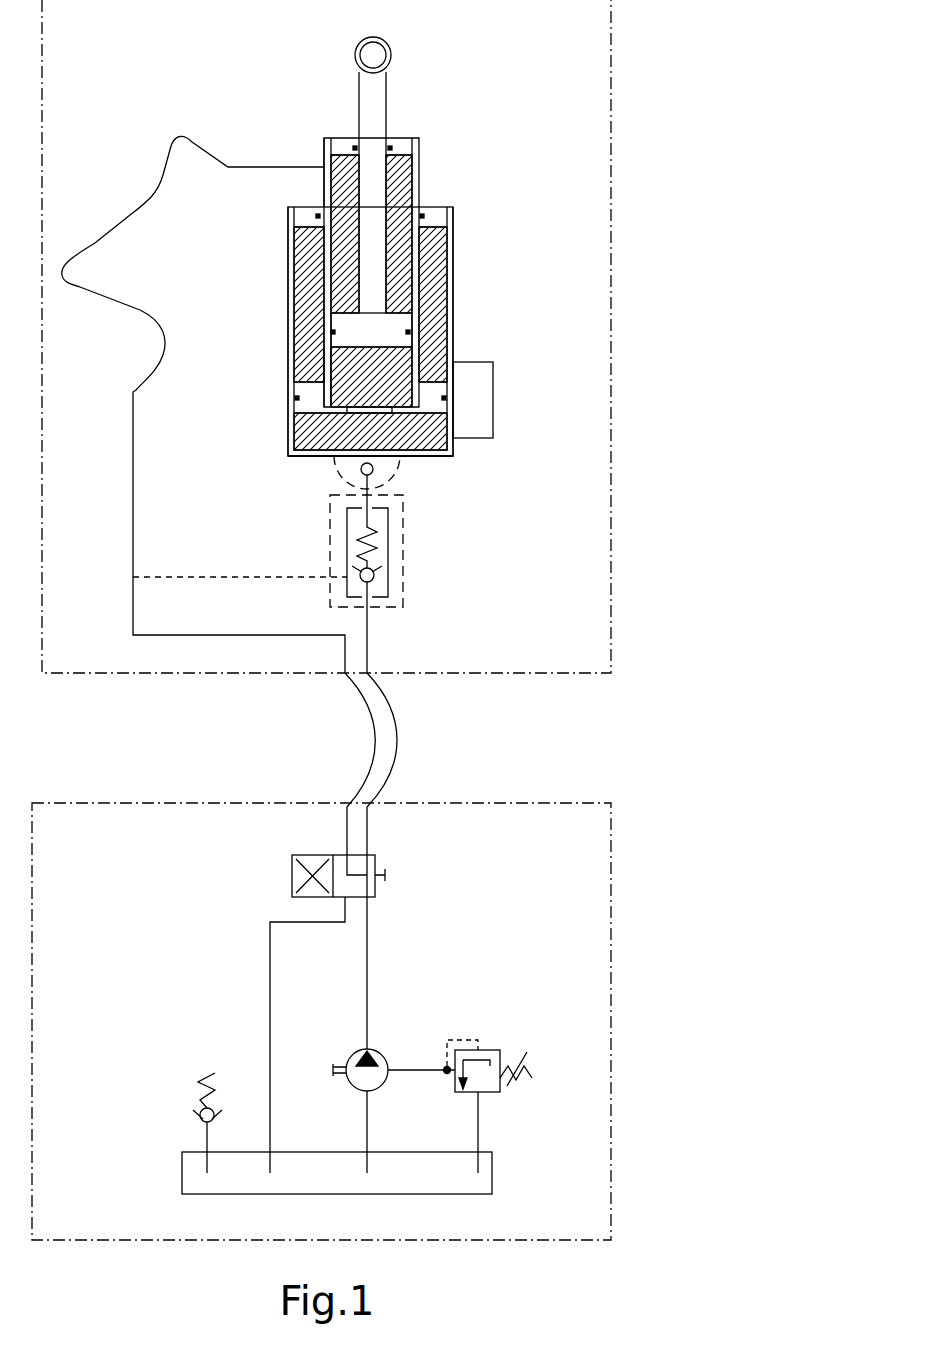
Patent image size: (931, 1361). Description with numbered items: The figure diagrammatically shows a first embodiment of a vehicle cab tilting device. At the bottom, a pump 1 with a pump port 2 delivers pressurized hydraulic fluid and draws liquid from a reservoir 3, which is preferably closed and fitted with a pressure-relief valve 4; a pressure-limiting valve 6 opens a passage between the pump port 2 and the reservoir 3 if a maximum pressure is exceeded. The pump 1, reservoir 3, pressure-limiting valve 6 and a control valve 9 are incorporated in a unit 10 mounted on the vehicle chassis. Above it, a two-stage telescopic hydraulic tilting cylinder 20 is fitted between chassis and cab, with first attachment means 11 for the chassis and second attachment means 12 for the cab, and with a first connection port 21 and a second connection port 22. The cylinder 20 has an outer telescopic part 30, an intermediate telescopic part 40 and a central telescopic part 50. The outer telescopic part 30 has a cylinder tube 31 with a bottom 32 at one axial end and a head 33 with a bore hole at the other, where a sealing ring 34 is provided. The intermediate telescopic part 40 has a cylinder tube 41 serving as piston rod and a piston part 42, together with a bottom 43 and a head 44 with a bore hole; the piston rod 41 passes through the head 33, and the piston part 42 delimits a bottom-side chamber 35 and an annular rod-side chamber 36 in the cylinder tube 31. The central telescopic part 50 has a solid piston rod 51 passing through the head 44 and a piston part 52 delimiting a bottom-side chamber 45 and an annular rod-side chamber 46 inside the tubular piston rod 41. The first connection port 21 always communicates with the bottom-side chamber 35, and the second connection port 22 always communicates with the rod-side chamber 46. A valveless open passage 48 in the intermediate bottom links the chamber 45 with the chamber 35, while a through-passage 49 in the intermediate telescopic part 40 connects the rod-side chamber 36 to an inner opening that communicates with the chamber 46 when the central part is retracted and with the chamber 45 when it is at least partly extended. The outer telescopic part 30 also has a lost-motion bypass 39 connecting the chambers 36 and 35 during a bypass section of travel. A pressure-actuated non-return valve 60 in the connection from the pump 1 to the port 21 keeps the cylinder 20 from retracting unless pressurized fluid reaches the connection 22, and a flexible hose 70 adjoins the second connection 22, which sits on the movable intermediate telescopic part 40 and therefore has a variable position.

The pump 1 is at (371, 1081).
The pump port 2 is at (368, 1050).
The reservoir 3 is at (482, 1180).
The pressure-relief valve 4 is at (198, 1097).
The pressure-limiting valve 6 is at (509, 1036).
The control valve 9 is at (394, 906).
The unit 10 is at (612, 852).
The first attachment means 11 is at (410, 38).
The second attachment means 12 is at (422, 479).
The hydraulic tilting cylinder 20 is at (288, 482).
The first connection port 21 is at (362, 452).
The second connection port 22 is at (320, 165).
The outer telescopic part 30 is at (465, 287).
The cylinder tube 31 is at (450, 337).
The bottom 32 is at (435, 457).
The head 33 is at (433, 220).
The sealing ring 34 is at (317, 215).
The bottom-side chamber 35 is at (300, 440).
The annular rod-side chamber 36 is at (430, 260).
The lost-motion bypass 39 is at (493, 393).
The intermediate telescopic part 40 is at (442, 153).
The cylinder tube as piston rod 41 is at (417, 193).
The piston part 42 is at (305, 387).
The bottom 43 is at (322, 411).
The head 44 is at (403, 146).
The bottom-side chamber 45 is at (365, 360).
The annular rod-side chamber 46 is at (397, 178).
The open passage 48 is at (367, 410).
The through-passage 49 is at (323, 368).
The central telescopic part 50 is at (402, 104).
The piston rod 51 is at (387, 87).
The piston part 52 is at (350, 327).
The pressure-actuated non-return valve 60 is at (407, 555).
The flexible hose 70 is at (212, 150).